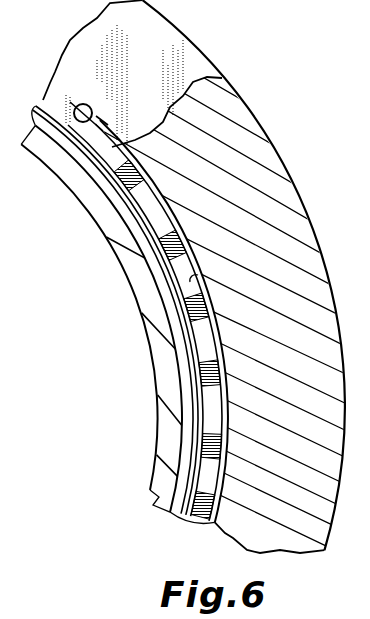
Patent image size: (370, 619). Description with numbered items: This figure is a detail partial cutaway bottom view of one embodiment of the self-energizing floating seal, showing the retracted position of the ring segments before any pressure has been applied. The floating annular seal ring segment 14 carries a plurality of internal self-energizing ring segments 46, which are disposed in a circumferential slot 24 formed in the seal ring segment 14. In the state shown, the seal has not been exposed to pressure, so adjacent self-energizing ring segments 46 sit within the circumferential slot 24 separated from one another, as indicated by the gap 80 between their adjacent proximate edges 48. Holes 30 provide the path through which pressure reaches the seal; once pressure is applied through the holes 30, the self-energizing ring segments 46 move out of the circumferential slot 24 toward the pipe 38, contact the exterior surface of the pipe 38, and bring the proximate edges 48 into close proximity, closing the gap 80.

The floating annular seal ring segment 14 is at (190, 55).
The holes 30 is at (77, 106).
The pipe 38 is at (167, 345).
The circumferential slot 24 is at (162, 285).
The self-energizing ring segments 46 is at (160, 232).
The gap 80 is at (183, 285).
The proximate edges 48 is at (197, 272).